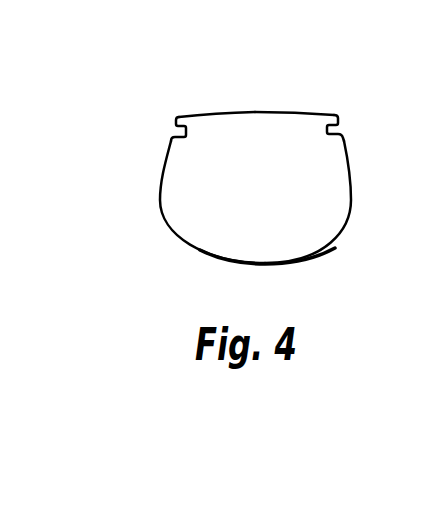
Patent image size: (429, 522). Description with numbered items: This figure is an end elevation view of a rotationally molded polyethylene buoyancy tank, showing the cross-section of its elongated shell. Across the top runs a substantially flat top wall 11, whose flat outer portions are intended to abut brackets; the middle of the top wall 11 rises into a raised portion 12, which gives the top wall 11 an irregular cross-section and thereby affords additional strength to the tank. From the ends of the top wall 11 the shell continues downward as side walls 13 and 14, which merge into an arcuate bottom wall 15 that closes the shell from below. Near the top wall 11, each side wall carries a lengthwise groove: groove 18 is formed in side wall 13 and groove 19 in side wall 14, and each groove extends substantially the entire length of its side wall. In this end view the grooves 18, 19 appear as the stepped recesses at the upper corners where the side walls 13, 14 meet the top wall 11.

The top wall 11 is at (202, 113).
The raised portion 12 is at (252, 112).
The side wall 13 is at (350, 195).
The side wall 14 is at (160, 192).
The arcuate bottom wall 15 is at (273, 262).
The lengthwise groove 18 is at (336, 129).
The lengthwise groove 19 is at (174, 127).